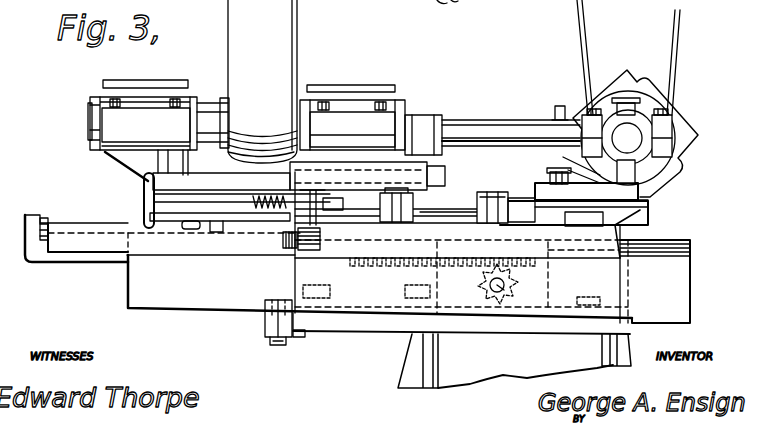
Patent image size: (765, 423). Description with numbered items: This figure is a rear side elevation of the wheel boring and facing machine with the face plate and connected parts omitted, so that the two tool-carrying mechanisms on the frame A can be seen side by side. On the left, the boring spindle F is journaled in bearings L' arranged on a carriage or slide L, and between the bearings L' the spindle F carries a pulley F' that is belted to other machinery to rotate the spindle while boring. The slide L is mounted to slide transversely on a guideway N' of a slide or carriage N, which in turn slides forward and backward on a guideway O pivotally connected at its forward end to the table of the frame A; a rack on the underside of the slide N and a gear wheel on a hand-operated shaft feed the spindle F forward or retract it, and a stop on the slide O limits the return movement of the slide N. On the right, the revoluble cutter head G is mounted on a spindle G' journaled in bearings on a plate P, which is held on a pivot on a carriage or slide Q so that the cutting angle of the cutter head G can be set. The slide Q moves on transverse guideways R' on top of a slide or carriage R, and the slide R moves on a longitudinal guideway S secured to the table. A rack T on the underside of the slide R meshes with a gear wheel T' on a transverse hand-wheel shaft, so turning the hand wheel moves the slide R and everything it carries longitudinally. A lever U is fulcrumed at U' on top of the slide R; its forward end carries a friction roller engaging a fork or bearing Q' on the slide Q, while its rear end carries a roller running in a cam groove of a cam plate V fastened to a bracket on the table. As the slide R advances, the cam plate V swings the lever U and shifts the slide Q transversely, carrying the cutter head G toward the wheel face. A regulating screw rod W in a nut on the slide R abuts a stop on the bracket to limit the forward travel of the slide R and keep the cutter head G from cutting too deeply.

The boring spindle F is at (319, 134).
The pulley F' is at (386, 109).
The carriage or slide L is at (129, 200).
The bearings L' is at (247, 104).
The cam plate V is at (416, 160).
The slide or carriage N is at (76, 230).
The guideway N' is at (211, 256).
The regulating screw rod W is at (262, 240).
The lever U is at (400, 199).
The fulcrum U' is at (396, 215).
The carriage or slide Q is at (587, 216).
The fork or bearing Q' is at (520, 199).
The plate P is at (538, 180).
The cutter head G is at (639, 133).
The spindle G' is at (628, 137).
The slide or carriage R is at (461, 262).
The transverse guideways R' is at (631, 248).
The longitudinal guideway S is at (690, 287).
The rack T is at (518, 283).
The gear wheel T' is at (392, 298).
The guideway O is at (152, 304).
The frame A is at (417, 383).